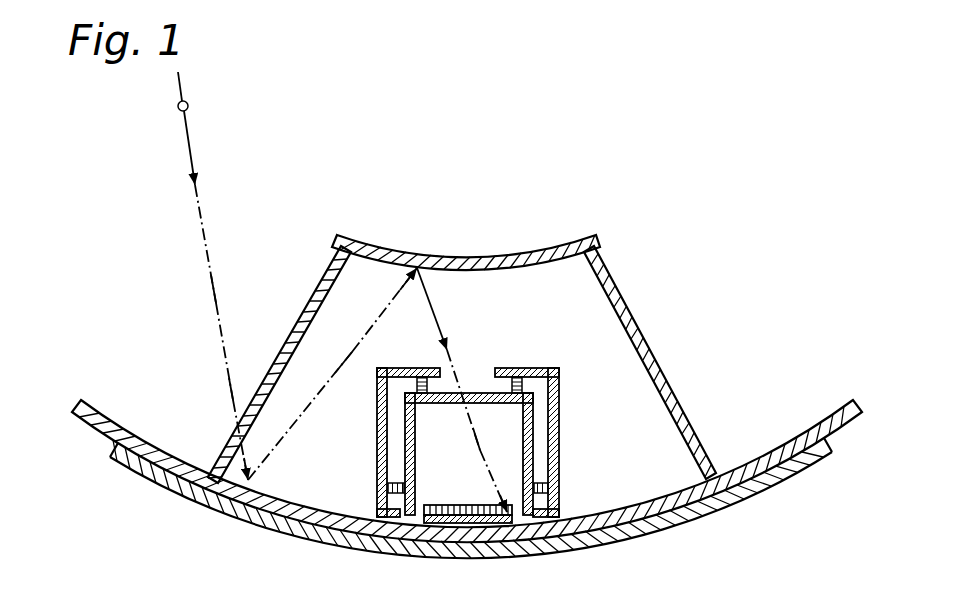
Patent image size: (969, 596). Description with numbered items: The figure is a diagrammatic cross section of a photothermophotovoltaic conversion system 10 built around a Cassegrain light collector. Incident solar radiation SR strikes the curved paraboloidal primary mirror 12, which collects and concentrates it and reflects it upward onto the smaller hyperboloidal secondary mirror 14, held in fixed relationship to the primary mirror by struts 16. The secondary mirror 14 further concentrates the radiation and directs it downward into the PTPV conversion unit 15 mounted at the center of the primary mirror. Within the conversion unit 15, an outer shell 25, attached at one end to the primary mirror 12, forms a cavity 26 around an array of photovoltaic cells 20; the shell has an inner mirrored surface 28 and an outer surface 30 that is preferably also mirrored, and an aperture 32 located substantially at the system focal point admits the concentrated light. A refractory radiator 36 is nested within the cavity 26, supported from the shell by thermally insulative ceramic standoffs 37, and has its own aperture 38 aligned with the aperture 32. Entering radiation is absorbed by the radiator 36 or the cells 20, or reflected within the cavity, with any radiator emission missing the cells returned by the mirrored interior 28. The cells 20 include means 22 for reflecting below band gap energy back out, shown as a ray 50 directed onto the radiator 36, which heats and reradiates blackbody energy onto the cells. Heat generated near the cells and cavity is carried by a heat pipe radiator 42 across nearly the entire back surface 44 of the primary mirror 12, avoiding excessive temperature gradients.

The photothermophotovoltaic conversion system 10 is at (568, 158).
The primary mirror 12 is at (90, 397).
The secondary mirror 14 is at (340, 232).
The PTPV conversion unit 15 is at (562, 355).
The struts 16 is at (316, 291).
The photovoltaic cells 20 is at (470, 500).
The means for reflecting below band gap energy 22 is at (457, 530).
The outer shell 25 is at (383, 367).
The cavity 26 is at (478, 393).
The inner mirrored surface 28 is at (395, 509).
The outer surface 30 is at (382, 465).
The aperture 32 is at (486, 372).
The radiator 36 is at (425, 413).
The thermally insulative standoffs 37 is at (522, 385).
The radiator aperture 38 is at (533, 420).
The heat pipe radiator 42 is at (162, 481).
The back surface 44 is at (93, 423).
The ray 50 is at (510, 508).
The incident solar radiation SR is at (189, 105).